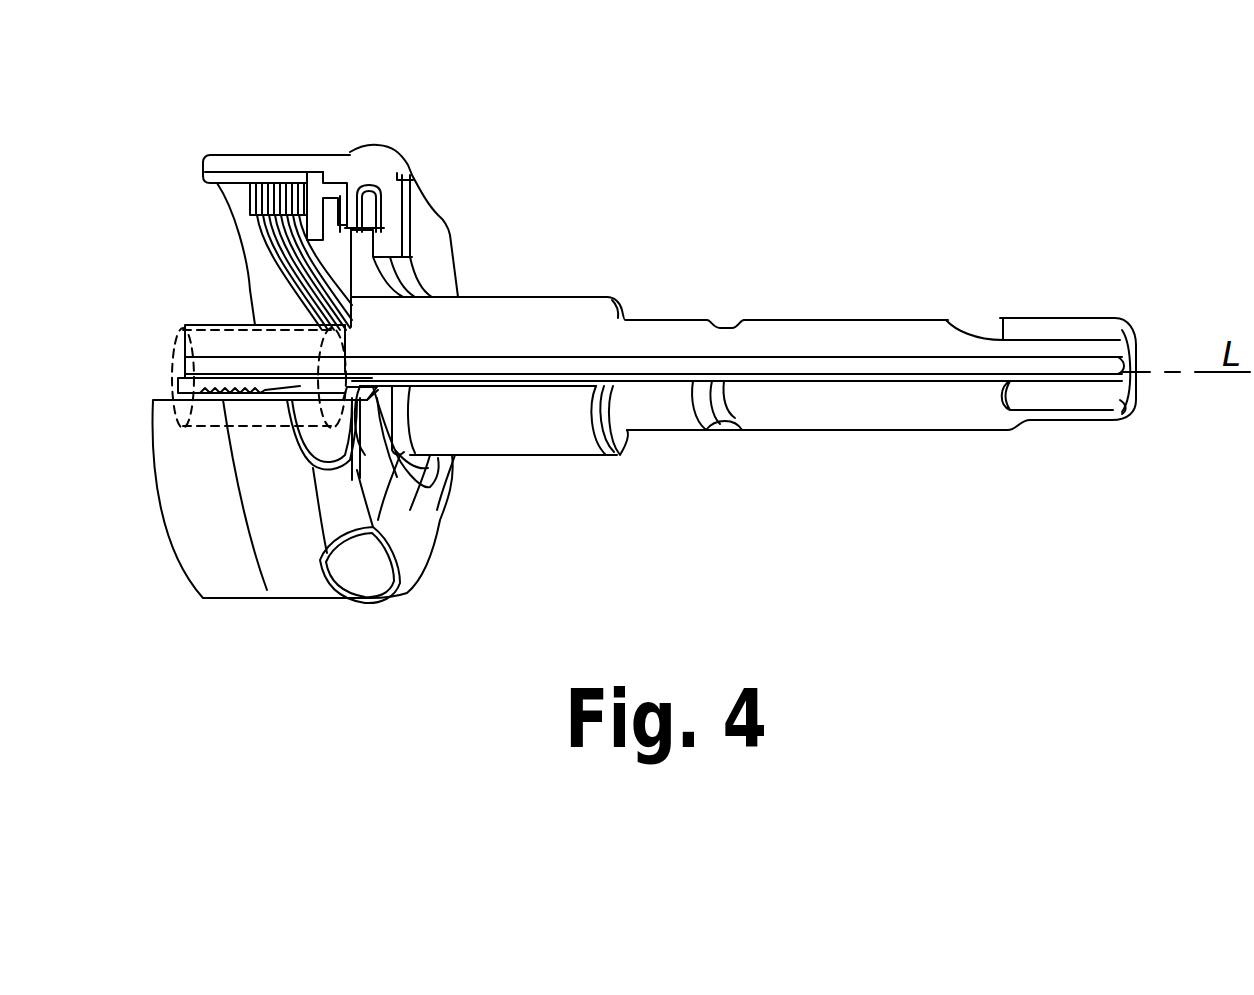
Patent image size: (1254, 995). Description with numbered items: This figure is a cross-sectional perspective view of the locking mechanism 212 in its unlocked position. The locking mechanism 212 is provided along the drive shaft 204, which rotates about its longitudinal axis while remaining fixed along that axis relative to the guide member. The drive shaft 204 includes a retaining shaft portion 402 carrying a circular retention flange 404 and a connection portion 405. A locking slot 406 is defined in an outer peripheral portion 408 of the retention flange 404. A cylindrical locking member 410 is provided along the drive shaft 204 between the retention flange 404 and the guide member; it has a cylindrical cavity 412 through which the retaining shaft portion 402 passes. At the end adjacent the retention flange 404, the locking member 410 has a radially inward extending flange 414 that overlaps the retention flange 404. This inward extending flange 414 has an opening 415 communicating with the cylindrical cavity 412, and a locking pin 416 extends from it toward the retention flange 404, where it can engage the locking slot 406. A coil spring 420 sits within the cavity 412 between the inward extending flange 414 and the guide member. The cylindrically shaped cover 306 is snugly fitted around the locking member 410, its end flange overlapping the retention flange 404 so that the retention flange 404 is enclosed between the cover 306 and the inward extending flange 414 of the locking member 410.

The drive shaft 204 is at (649, 466).
The locking mechanism 212 is at (845, 588).
The cover 306 is at (284, 572).
The retaining shaft portion 402 is at (542, 437).
The retention flange 404 is at (362, 243).
The connection portion 405 is at (192, 323).
The locking slot 406 is at (366, 212).
The outer peripheral portion 408 is at (373, 192).
The locking member 410 is at (210, 155).
The cylindrical cavity 412 is at (240, 258).
The inward extending flange 414 is at (318, 208).
The opening 415 is at (330, 285).
The locking pin 416 is at (366, 188).
The coil spring 420 is at (247, 198).